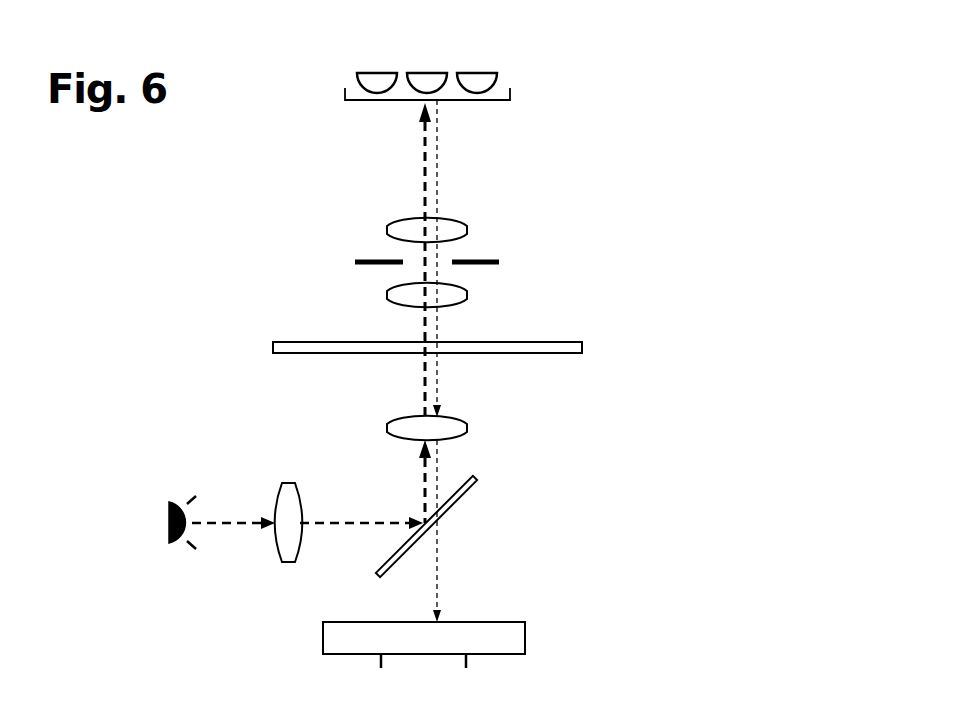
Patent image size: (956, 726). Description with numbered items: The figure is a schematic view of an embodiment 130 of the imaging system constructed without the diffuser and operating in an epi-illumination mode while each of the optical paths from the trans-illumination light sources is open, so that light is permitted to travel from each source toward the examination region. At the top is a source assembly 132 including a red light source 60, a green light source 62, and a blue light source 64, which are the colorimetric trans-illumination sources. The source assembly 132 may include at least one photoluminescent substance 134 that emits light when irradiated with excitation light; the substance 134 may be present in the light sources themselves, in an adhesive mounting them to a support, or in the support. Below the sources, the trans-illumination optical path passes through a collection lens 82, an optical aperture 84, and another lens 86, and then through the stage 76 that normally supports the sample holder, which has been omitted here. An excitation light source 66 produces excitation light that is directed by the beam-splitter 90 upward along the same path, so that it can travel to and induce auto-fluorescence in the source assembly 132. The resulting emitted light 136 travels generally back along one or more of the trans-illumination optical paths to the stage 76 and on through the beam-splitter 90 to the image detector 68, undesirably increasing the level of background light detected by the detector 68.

The red light source 60 is at (358, 82).
The green light source 62 is at (451, 76).
The blue light source 64 is at (496, 82).
The excitation light source 66 is at (173, 500).
The image detector 68 is at (500, 622).
The stage 76 is at (313, 342).
The collection lens 82 is at (455, 221).
The optical aperture 84 is at (480, 261).
The lens 86 is at (459, 287).
The beam-splitter 90 is at (458, 495).
The embodiment of imaging system 130 is at (161, 311).
The source assembly 132 is at (376, 108).
The photoluminescent substance 134 is at (453, 97).
The emitted light 136 is at (439, 148).